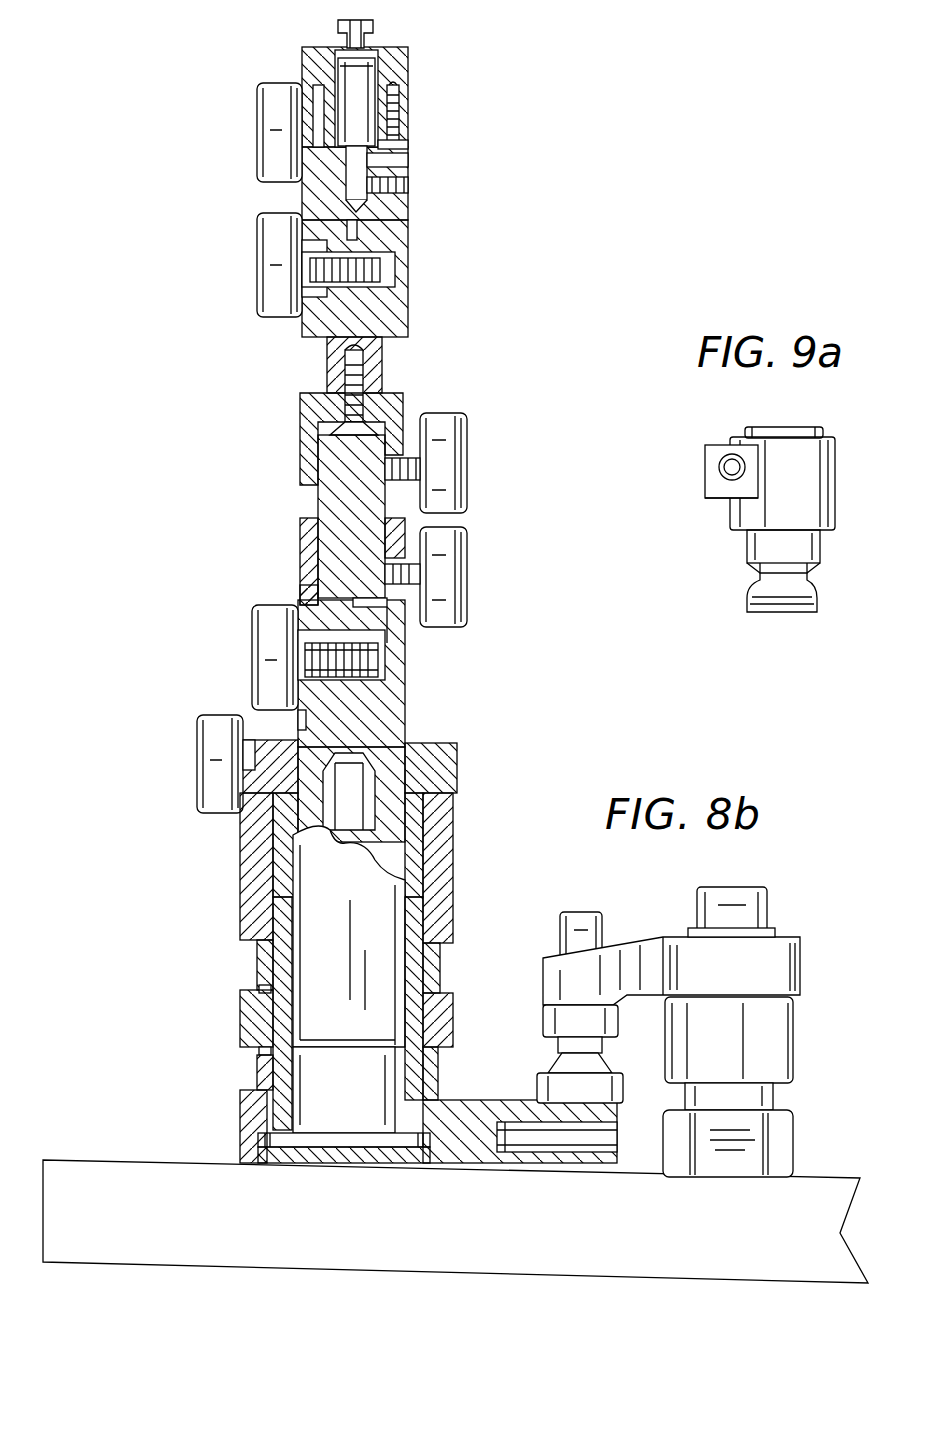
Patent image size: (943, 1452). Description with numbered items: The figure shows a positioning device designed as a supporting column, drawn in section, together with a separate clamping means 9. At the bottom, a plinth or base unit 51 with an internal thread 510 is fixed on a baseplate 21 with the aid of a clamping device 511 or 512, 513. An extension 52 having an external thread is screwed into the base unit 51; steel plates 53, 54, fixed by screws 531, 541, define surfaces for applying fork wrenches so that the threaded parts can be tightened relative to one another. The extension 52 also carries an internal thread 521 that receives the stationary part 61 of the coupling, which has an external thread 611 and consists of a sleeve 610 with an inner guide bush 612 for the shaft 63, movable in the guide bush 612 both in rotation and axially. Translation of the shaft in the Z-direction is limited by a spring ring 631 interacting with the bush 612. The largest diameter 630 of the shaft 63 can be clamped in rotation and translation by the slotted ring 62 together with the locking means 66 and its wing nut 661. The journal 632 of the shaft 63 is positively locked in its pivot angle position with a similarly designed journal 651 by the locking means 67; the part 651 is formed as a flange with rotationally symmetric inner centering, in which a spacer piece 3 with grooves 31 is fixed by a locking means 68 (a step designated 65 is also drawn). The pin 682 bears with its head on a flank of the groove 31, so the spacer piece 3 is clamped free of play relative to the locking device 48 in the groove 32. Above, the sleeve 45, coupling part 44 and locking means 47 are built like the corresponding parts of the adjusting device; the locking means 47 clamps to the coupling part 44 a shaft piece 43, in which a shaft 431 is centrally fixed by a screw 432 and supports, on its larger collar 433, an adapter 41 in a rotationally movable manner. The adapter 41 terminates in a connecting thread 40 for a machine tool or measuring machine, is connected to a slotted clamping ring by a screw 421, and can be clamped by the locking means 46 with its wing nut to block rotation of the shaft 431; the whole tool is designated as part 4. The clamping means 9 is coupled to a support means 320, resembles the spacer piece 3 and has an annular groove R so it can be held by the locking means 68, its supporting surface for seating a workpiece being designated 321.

In FIG. 8B, the spacer piece 3 is at (380, 510).
In FIG. 8B, the tool 4 is at (510, 176).
In FIG. 9A, the clamping means 9 is at (850, 450).
In FIG. 8B, the baseplate 21 is at (815, 1205).
In FIG. 8B, the groove 31 is at (303, 565).
In FIG. 8B, the groove 32 is at (303, 470).
In FIG. 8B, the connecting thread 40 is at (375, 30).
In FIG. 8B, the adapter 41 is at (405, 52).
In FIG. 8B, the shaft piece 43 is at (303, 200).
In FIG. 8B, the coupling part 44 is at (400, 305).
In FIG. 8B, the sleeve 45 is at (395, 400).
In FIG. 8B, the locking means 46 is at (262, 148).
In FIG. 8B, the locking means 47 is at (262, 262).
In FIG. 8B, the locking device 48 is at (462, 435).
In FIG. 8B, the plinth (base unit) 51 is at (450, 1130).
In FIG. 8B, the extension 52 is at (262, 1015).
In FIG. 8B, the steel plate 53 is at (268, 960).
In FIG. 8B, the steel plate 54 is at (262, 1080).
In FIG. 8B, the stationary part 61 is at (245, 882).
In FIG. 8B, the slotted ring 62 is at (455, 775).
In FIG. 8B, the shaft 63 is at (410, 688).
In FIG. 8B, the notch 65 is at (300, 715).
In FIG. 8B, the locking means 66 is at (195, 780).
In FIG. 8B, the locking means 67 is at (255, 650).
In FIG. 8B, the locking means 68 is at (470, 545).
In FIG. 9A, the support means 320 is at (793, 543).
In FIG. 9A, the supporting surface 321 is at (790, 428).
In FIG. 8B, the screw 421 is at (403, 108).
In FIG. 8B, the shaft 431 is at (405, 160).
In FIG. 8B, the screw 432 is at (400, 185).
In FIG. 8B, the larger collar 433 is at (340, 75).
In FIG. 8B, the internal thread 510 is at (248, 1110).
In FIG. 8B, the clamping device 511 is at (555, 1140).
In FIG. 8B, the clamping device 512 is at (730, 1172).
In FIG. 8B, the clamping device 513 is at (573, 930).
In FIG. 8B, the internal thread 521 is at (258, 985).
In FIG. 8B, the screw 531 is at (262, 955).
In FIG. 8B, the screw 541 is at (258, 1055).
In FIG. 8B, the sleeve 610 is at (245, 852).
In FIG. 8B, the external thread 611 is at (435, 983).
In FIG. 8B, the guide bush 612 is at (425, 880).
In FIG. 8B, the largest diameter 630 is at (370, 735).
In FIG. 8B, the spring ring 631 is at (335, 1050).
In FIG. 8B, the journal 632 is at (393, 680).
In FIG. 8B, the journal 651 is at (305, 592).
In FIG. 8B, the wing nut 661 is at (200, 745).
In FIG. 8B, the pin 682 is at (420, 575).
In FIG. 9A, the annular groove R is at (815, 590).